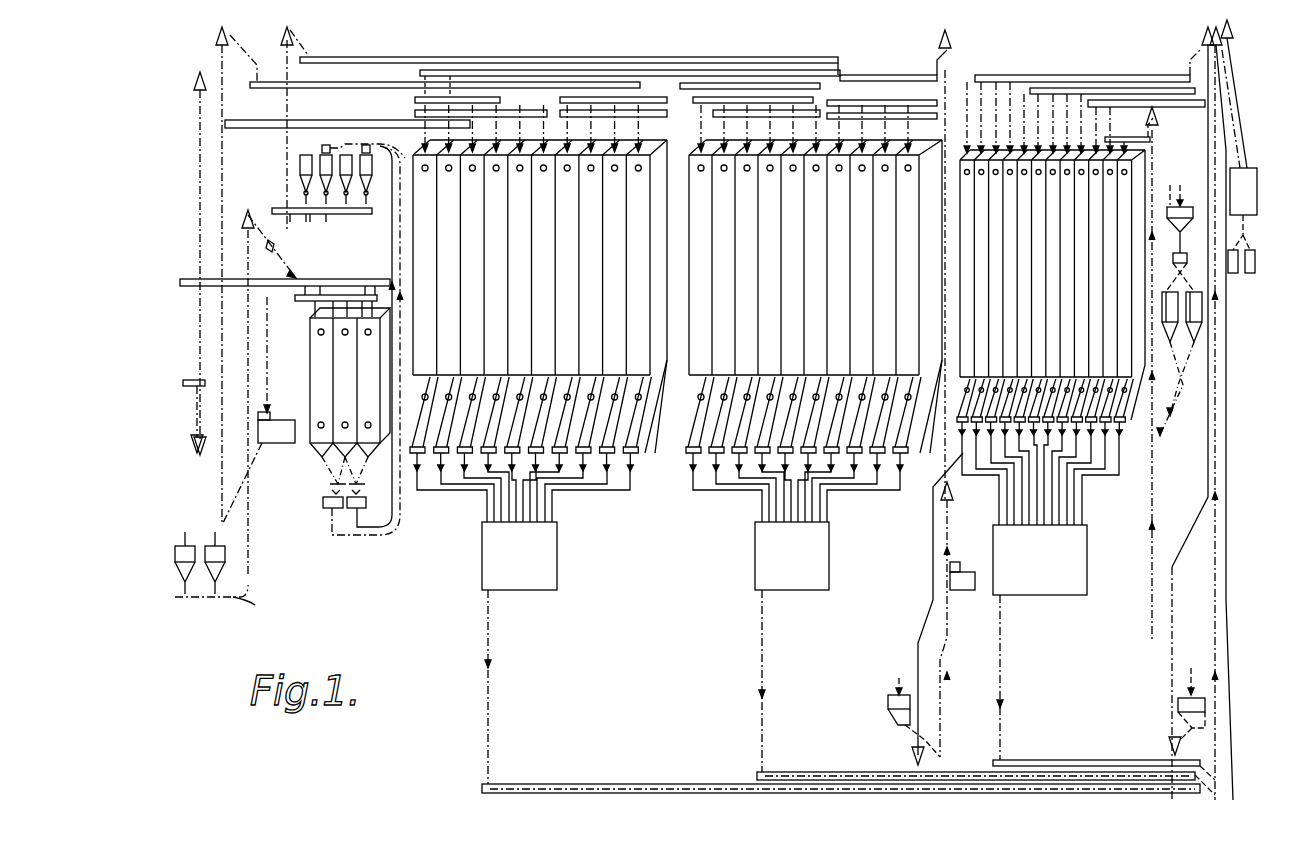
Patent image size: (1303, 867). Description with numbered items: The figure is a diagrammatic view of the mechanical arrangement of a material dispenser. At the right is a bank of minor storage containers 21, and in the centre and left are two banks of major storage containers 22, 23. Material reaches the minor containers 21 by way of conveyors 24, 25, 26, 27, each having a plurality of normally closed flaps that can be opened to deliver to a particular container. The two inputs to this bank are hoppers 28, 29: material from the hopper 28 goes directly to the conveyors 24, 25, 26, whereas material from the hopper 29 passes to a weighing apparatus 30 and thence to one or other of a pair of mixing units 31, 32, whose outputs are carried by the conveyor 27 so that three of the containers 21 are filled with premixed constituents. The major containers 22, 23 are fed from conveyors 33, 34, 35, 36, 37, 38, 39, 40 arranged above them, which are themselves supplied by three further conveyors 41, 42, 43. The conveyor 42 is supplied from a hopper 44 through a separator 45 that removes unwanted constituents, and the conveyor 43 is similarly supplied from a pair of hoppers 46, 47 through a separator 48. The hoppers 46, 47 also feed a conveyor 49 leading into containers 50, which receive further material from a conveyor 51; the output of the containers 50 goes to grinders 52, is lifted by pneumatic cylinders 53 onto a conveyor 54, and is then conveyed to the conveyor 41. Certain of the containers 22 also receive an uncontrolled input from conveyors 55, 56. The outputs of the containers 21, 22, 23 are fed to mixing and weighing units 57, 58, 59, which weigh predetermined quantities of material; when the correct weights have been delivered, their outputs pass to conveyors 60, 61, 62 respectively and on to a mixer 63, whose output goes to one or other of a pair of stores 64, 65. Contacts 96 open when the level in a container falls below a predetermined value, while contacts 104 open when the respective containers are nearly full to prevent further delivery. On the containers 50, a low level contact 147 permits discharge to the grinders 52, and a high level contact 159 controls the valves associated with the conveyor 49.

The minor storage containers 21 is at (925, 280).
The major storage containers 22 is at (640, 300).
The major storage containers 23 is at (690, 225).
The conveyor 24 is at (1022, 75).
The conveyor 25 is at (1070, 88).
The conveyor 26 is at (1127, 100).
The conveyor 27 is at (1150, 137).
The hopper 28 is at (1178, 705).
The hopper 29 is at (1178, 212).
The weighing apparatus 30 is at (1173, 258).
The mixing unit 31 is at (1190, 330).
The mixing unit 32 is at (1200, 310).
The conveyor 33 is at (460, 97).
The conveyor 34 is at (490, 110).
The conveyor 35 is at (648, 110).
The conveyor 36 is at (610, 97).
The conveyor 37 is at (768, 110).
The conveyor 38 is at (730, 97).
The conveyor 39 is at (893, 100).
The conveyor 40 is at (940, 78).
The conveyor 41 is at (810, 57).
The conveyor 42 is at (868, 75).
The conveyor 43 is at (330, 88).
The hopper 44 is at (888, 700).
The separator 45 is at (970, 590).
The hopper 46 is at (188, 546).
The hopper 47 is at (253, 414).
The separator 48 is at (292, 443).
The conveyor 49 is at (315, 286).
The containers 50 is at (315, 370).
The conveyor 51 is at (200, 279).
The grinders 52 is at (347, 504).
The pneumatic cylinders 53 is at (300, 178).
The conveyor 54 is at (312, 214).
The conveyor 55 is at (190, 380).
The conveyor 56 is at (275, 120).
The mixing and weighing unit 57 is at (1040, 642).
The mixing and weighing unit 58 is at (519, 653).
The mixing and weighing unit 59 is at (792, 647).
The conveyor 60 is at (1080, 750).
The conveyor 61 is at (592, 784).
The conveyor 62 is at (815, 772).
The mixer 63 is at (1240, 180).
The store 64 is at (1233, 273).
The store 65 is at (1255, 262).
The contacts 96 is at (640, 398).
The contacts 104 is at (448, 168).
The low level contact 147 is at (345, 425).
The high level contact 159 is at (345, 333).